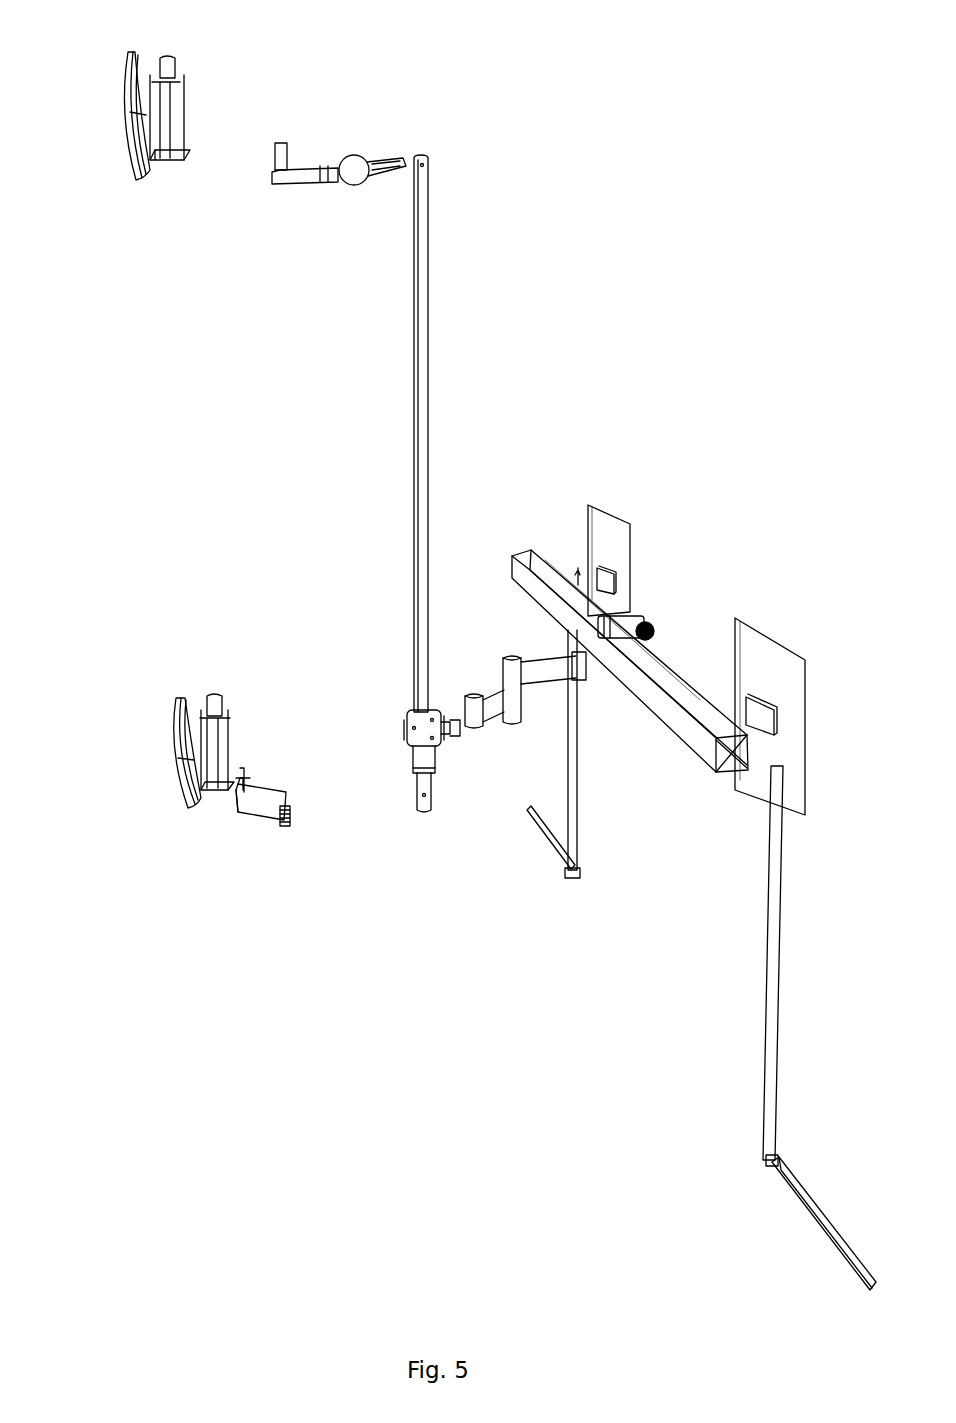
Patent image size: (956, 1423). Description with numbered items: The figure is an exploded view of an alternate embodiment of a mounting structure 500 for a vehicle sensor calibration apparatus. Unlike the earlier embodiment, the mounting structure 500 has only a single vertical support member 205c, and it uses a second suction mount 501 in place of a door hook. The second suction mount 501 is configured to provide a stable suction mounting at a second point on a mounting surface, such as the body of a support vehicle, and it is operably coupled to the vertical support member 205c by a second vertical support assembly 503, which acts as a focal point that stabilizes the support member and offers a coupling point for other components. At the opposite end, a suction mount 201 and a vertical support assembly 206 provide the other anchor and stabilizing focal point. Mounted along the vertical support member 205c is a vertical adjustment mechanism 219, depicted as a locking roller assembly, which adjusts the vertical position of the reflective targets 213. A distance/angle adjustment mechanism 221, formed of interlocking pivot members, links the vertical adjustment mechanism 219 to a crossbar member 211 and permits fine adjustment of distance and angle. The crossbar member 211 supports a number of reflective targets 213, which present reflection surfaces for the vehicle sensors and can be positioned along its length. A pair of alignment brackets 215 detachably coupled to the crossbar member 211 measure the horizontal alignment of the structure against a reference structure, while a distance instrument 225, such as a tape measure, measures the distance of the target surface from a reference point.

The mounting structure 500 is at (52, 56).
The second suction mount 501 is at (128, 136).
The second vertical support assembly 503 is at (342, 164).
The vertical support member 205c is at (430, 245).
The vertical adjustment mechanism 219 is at (407, 716).
The distance/angle adjustment mechanism 221 is at (519, 714).
The crossbar member 211 is at (513, 557).
The reflective targets 213 is at (593, 508).
The distance instrument 225 is at (656, 632).
The alignment brackets 215 is at (574, 804).
The suction mount 201 is at (178, 698).
The vertical support assembly 206 is at (286, 800).